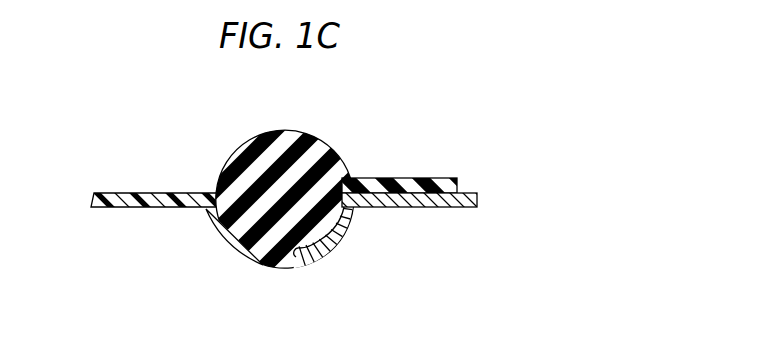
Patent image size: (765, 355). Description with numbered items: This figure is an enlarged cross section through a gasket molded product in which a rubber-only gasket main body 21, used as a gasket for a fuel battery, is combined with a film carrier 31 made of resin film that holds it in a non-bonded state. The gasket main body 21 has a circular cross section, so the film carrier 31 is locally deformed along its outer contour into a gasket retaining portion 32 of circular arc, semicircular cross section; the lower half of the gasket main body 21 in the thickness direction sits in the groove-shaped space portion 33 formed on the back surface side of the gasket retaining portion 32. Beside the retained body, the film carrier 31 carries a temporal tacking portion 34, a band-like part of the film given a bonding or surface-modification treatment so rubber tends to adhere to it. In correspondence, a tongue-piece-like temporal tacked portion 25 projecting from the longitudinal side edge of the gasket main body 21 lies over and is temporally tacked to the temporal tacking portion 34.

The gasket main body 21 is at (318, 156).
The temporal tacked portion 25 is at (433, 178).
The film carrier 31 is at (131, 208).
The gasket retaining portion 32 is at (257, 263).
The space portion 33 is at (314, 244).
The temporal tacking portion 34 is at (408, 208).